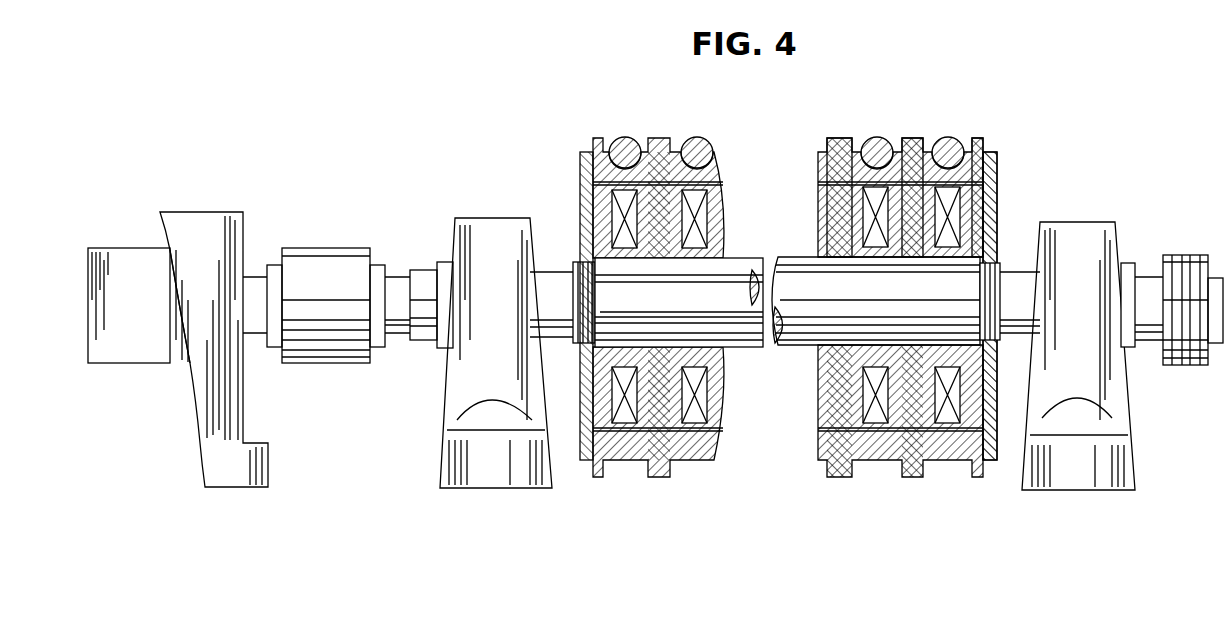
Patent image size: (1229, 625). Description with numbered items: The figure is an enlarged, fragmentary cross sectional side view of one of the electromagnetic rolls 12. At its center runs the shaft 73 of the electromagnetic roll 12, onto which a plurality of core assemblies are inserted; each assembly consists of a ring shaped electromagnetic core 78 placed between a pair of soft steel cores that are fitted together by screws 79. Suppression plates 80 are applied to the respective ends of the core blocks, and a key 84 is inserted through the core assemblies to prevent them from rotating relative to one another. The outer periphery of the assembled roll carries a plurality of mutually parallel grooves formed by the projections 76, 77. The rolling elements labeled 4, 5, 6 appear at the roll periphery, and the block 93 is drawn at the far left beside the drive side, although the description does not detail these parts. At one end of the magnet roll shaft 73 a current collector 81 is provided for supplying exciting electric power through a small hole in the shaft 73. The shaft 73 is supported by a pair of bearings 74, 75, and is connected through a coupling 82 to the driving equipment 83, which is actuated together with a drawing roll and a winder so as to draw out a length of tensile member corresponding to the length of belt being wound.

The ball bearing 4 is at (948, 137).
The ball bearing 5 is at (877, 153).
The ball bearing 6 is at (661, 153).
The electromagnetic roll 12 is at (587, 151).
The shaft 73 is at (793, 346).
The bearing 74 is at (1093, 230).
The bearing 75 is at (492, 218).
The projection 76 is at (978, 140).
The projection 77 is at (914, 138).
The electromagnetic core 78 is at (955, 212).
The screw 79 is at (998, 158).
The suppression plate 80 is at (578, 210).
The current collector 81 is at (1190, 257).
The coupling 82 is at (335, 248).
The driving equipment 83 is at (220, 212).
The key 84 is at (793, 257).
The mounting block 93 is at (124, 252).